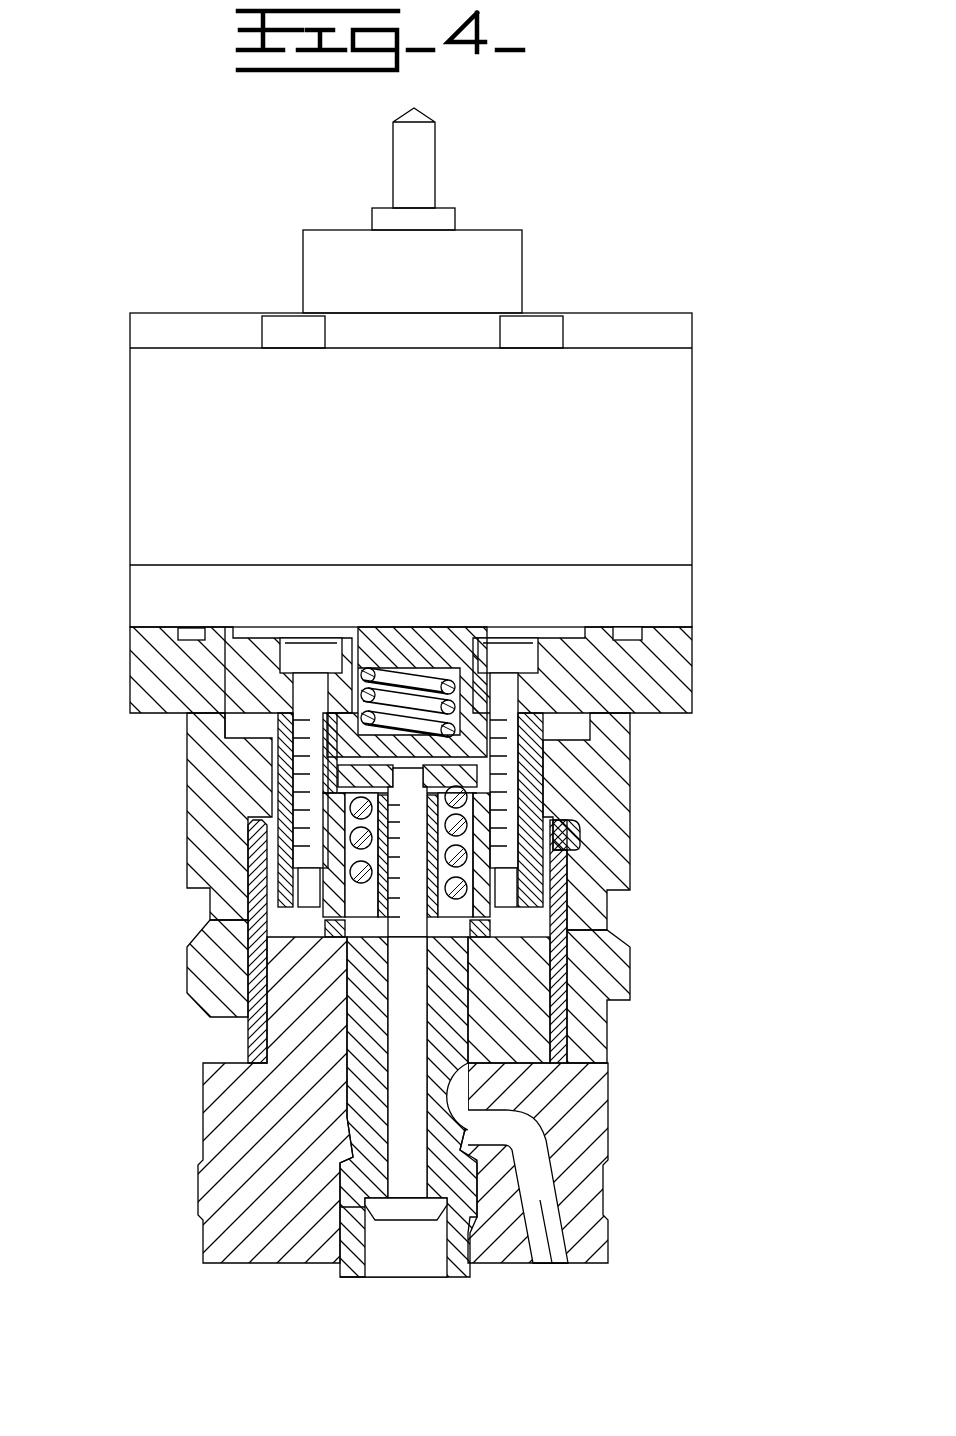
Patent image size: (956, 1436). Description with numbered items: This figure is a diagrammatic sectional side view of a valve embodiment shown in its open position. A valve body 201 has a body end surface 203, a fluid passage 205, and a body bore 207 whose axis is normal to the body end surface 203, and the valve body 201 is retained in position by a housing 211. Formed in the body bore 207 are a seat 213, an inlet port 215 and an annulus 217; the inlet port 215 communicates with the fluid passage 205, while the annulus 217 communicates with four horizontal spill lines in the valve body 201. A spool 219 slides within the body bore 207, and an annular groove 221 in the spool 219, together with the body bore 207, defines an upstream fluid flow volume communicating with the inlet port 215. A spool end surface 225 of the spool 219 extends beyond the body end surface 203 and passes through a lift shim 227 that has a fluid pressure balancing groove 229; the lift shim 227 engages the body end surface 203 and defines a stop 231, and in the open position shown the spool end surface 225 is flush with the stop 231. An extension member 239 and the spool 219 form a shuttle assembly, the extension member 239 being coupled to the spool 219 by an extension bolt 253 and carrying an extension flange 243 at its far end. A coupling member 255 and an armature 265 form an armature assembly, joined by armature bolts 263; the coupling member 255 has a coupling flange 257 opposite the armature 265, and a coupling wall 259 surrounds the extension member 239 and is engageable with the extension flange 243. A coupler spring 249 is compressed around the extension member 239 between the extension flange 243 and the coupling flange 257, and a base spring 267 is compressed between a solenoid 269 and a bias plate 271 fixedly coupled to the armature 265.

The valve body 201 is at (590, 1100).
The body end surface 203 is at (210, 920).
The fluid passage 205 is at (553, 1237).
The body bore 207 is at (349, 1247).
The housing 211 is at (607, 793).
The seat 213 is at (343, 1200).
The inlet port 215 is at (467, 1063).
The annulus 217 is at (368, 1207).
The spool 219 is at (462, 1023).
The annular groove 221 is at (473, 1150).
The spool end surface 225 is at (558, 848).
The lift shim 227 is at (492, 925).
The fluid pressure balancing groove 229 is at (558, 900).
The stop 231 is at (340, 905).
The extension member 239 is at (415, 863).
The extension flange 243 is at (467, 770).
The coupler spring 249 is at (455, 828).
The extension bolt 253 is at (452, 880).
The coupling member 255 is at (345, 860).
The coupling flange 257 is at (355, 962).
The coupling wall 259 is at (335, 805).
The armature bolts 263 is at (303, 703).
The armature 265 is at (568, 668).
The base spring 267 is at (400, 690).
The solenoid 269 is at (650, 598).
The bias plate 271 is at (473, 727).